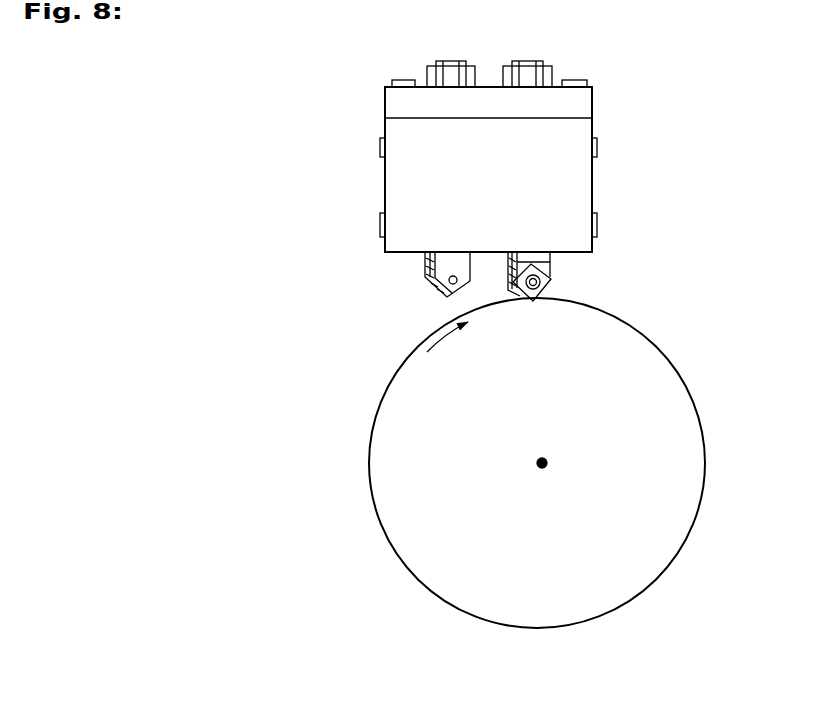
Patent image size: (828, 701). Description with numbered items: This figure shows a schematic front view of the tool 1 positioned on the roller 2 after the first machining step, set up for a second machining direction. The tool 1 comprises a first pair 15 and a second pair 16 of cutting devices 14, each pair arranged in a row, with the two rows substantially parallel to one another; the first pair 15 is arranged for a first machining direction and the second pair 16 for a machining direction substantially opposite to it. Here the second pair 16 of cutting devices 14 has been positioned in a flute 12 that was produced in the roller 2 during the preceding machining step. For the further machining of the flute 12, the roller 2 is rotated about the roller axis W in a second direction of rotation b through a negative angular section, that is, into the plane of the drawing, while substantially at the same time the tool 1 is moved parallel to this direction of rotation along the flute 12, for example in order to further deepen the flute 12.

The tool 1 is at (385, 117).
The roller 2 is at (657, 582).
The flute 12 is at (528, 300).
The cutting devices 14 is at (513, 278).
The first pair of cutting devices 15 is at (417, 273).
The second pair of cutting devices 16 is at (568, 268).
The roller axis W is at (542, 463).
The direction of rotation b is at (447, 338).